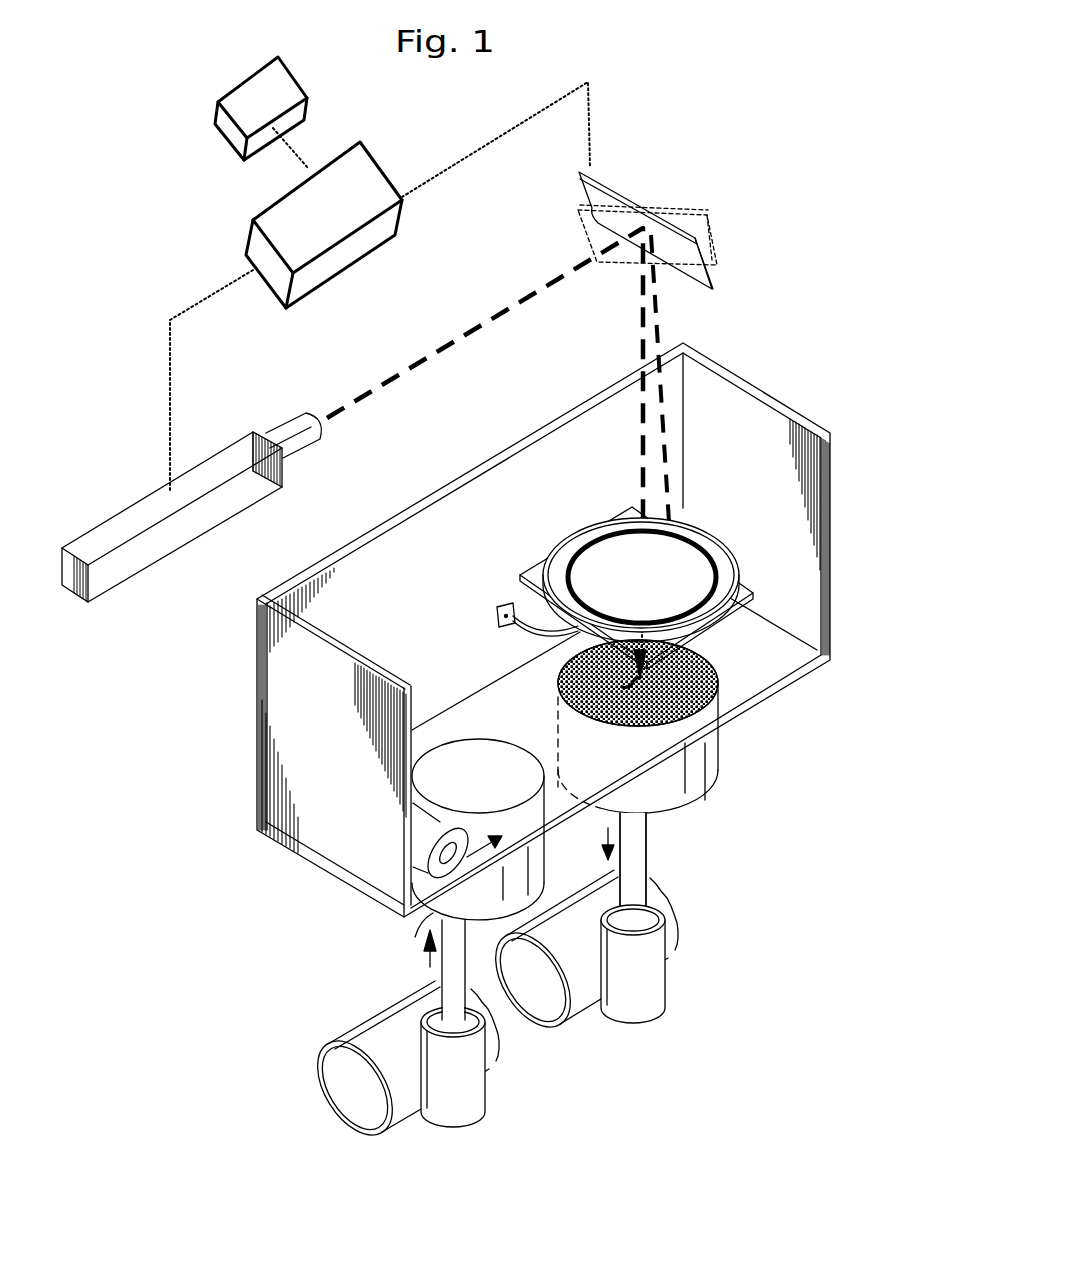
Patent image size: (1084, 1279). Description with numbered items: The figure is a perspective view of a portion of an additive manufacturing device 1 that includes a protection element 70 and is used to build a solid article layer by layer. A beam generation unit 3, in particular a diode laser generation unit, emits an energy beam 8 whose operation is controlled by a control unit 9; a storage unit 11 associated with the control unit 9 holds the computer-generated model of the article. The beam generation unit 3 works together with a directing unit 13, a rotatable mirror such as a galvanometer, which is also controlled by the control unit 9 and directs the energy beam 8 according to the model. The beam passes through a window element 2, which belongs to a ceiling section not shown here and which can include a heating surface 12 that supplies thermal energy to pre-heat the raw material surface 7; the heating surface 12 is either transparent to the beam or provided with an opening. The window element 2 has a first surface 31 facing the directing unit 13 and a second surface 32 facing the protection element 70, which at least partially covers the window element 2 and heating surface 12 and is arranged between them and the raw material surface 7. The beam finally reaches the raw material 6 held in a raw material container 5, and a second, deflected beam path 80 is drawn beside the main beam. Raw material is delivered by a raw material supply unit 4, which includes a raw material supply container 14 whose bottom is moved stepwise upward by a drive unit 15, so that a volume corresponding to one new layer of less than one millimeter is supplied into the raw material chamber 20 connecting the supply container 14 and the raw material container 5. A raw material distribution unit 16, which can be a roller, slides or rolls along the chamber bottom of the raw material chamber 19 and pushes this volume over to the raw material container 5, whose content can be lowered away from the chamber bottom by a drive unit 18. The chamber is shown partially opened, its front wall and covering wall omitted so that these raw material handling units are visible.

The additive manufacturing device 1 is at (687, 153).
The window element 2 is at (677, 570).
The beam generation unit 3 is at (150, 502).
The raw material supply unit 4 is at (372, 957).
The raw material container 5 is at (683, 793).
The raw material 6 is at (680, 692).
The raw material surface 7 is at (718, 655).
The energy beam 8 is at (488, 318).
The control unit 9 is at (245, 230).
The storage unit 11 is at (250, 105).
The heating surface 12 is at (560, 548).
The directing unit 13 is at (703, 265).
The raw material supply container 14 is at (475, 903).
The drive unit 15 is at (485, 1081).
The raw material distribution unit 16 is at (470, 800).
The drive unit 18 is at (665, 975).
The raw material chamber 19 is at (570, 800).
The raw material chamber 20 is at (612, 692).
The first surface 31 is at (700, 570).
The second surface 32 is at (575, 628).
The protection element 70 is at (755, 593).
The deflected laser beam 80 is at (658, 413).